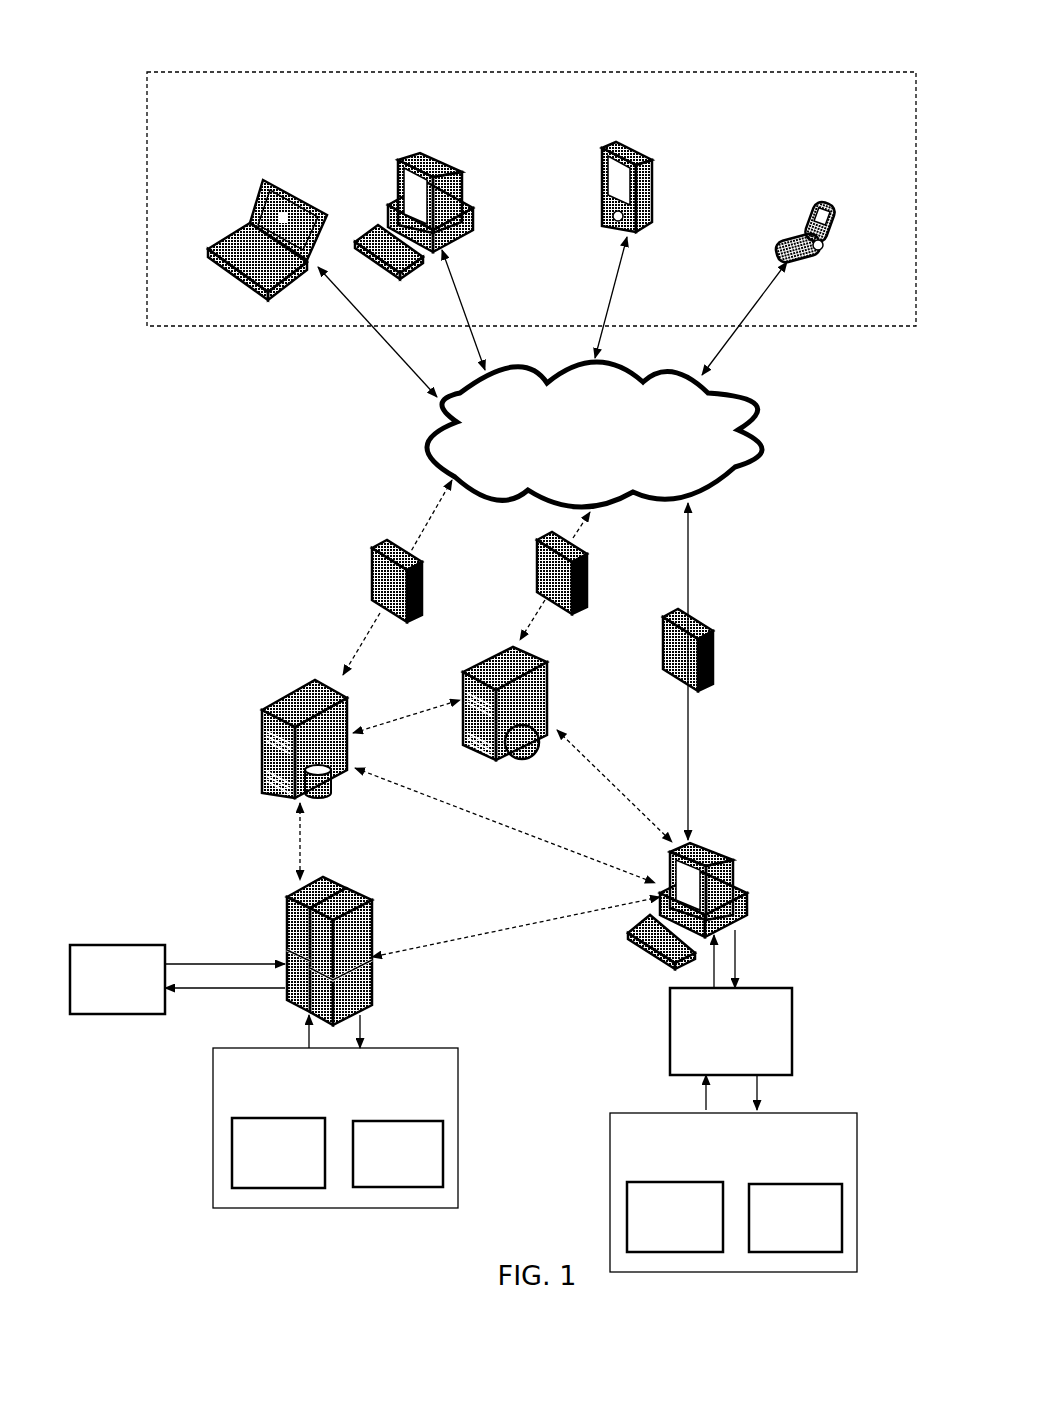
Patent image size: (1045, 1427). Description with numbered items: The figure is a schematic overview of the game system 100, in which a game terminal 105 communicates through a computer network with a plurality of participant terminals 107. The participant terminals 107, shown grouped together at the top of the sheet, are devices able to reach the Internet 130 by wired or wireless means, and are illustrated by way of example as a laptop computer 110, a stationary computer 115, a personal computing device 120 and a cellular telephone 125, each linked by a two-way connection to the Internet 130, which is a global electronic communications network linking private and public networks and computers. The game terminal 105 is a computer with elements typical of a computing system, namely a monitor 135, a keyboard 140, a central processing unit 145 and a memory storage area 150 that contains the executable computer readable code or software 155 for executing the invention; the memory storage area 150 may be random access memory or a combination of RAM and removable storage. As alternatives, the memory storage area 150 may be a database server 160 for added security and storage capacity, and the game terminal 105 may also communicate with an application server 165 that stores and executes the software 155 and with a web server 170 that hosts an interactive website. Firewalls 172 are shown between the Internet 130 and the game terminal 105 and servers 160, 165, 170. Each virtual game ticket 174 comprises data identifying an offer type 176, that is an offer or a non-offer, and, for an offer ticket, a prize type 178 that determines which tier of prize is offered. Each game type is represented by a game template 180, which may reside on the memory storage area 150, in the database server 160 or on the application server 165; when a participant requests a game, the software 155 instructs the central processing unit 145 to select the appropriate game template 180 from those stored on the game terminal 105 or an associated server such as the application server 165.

The game system 100 is at (283, 490).
The game terminal 105 is at (724, 846).
The participant terminals 107 is at (307, 70).
The laptop computer 110 is at (250, 202).
The stationary computer 115 is at (403, 160).
The personal computing device 120 is at (613, 140).
The cellular telephone 125 is at (825, 203).
The Internet 130 is at (717, 437).
The monitor 135 is at (737, 887).
The keyboard 140 is at (643, 950).
The central processing unit 145 is at (778, 1015).
The memory storage area 150 is at (688, 1184).
The software 155 is at (780, 1186).
The database server 160 is at (282, 697).
The application server 165 is at (290, 955).
The web server 170 is at (497, 669).
The firewalls 172 is at (372, 590).
The virtual game ticket 174 is at (368, 1113).
The offer type 176 is at (290, 1120).
The prize type 178 is at (385, 1123).
The game template 180 is at (128, 946).